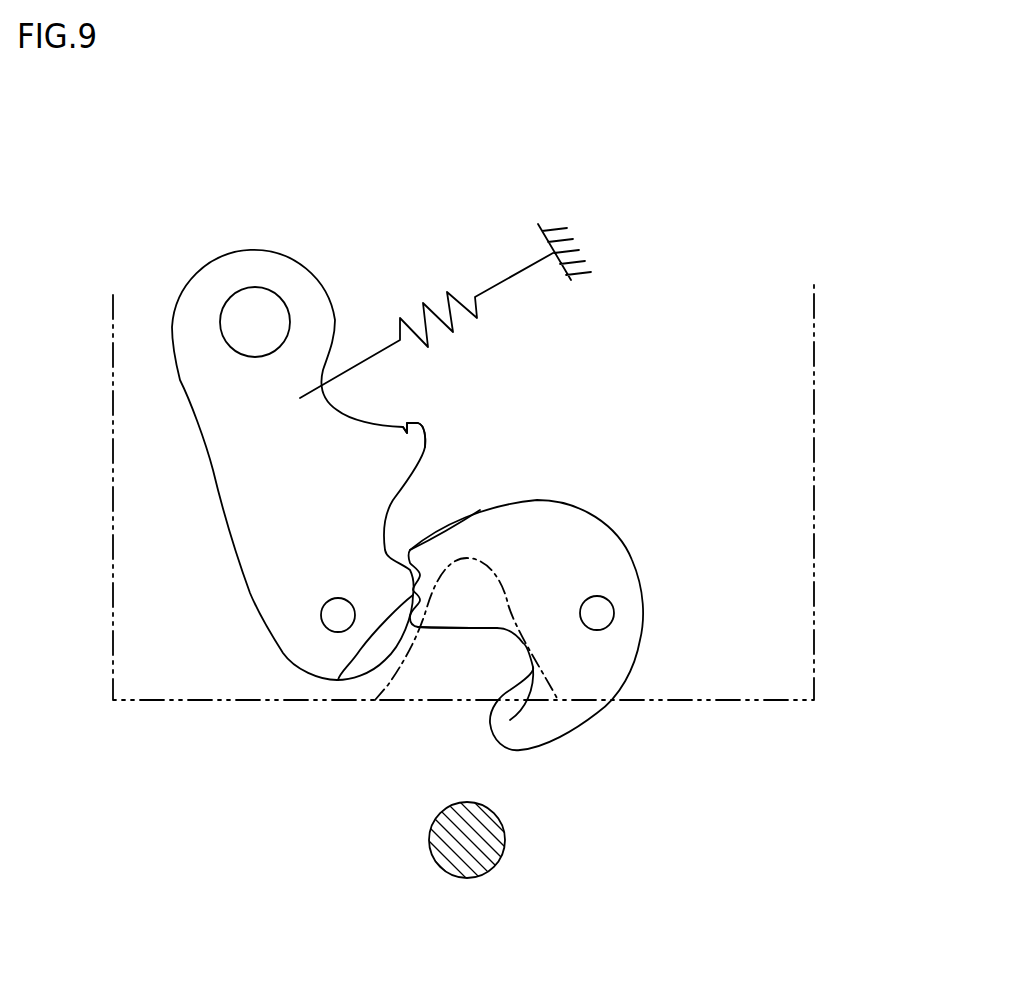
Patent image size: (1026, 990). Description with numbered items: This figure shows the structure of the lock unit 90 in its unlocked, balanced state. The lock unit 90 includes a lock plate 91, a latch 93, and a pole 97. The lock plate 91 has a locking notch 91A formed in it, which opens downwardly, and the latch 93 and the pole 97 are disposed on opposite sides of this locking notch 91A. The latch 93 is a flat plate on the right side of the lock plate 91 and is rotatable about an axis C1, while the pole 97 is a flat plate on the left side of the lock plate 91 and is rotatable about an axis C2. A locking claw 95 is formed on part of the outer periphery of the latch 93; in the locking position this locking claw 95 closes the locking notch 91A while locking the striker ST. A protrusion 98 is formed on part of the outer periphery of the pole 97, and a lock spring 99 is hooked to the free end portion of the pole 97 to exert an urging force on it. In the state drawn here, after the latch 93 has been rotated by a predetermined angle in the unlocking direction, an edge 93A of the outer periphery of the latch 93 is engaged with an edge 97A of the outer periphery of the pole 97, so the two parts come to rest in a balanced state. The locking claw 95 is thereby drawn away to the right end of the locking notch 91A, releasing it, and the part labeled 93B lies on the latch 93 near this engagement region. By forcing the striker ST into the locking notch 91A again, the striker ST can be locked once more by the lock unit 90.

The lock unit 90 is at (750, 730).
The lock plate 91 is at (814, 407).
The locking notch 91A is at (414, 675).
The latch 93 is at (613, 490).
The edge 93A is at (480, 510).
The engaging surface of latch 93B is at (460, 630).
The locking claw 95 is at (527, 732).
The pole 97 is at (204, 580).
The edge 97A is at (338, 680).
The protrusion 98 is at (407, 430).
The lock spring 99 is at (447, 303).
The axis C1 is at (597, 613).
The axis C2 is at (330, 615).
The striker ST is at (463, 857).